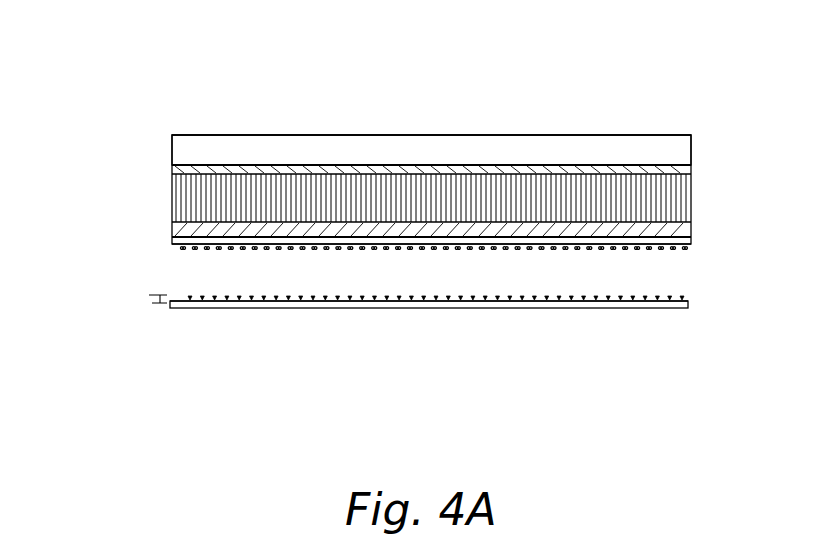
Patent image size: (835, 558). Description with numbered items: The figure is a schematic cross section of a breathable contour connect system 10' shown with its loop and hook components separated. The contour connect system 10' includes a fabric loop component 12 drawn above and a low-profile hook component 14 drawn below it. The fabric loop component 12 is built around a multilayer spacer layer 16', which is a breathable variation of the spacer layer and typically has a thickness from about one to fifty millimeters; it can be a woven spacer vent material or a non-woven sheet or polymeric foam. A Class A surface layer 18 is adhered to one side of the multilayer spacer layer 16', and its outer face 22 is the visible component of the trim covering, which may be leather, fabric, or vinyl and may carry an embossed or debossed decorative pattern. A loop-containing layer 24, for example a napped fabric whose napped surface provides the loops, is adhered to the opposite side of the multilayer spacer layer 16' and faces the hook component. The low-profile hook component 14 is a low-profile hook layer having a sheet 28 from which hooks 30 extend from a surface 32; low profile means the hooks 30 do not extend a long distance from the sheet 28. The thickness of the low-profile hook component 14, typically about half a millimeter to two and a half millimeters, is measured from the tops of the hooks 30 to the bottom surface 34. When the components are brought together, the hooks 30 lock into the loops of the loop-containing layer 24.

The contour connect system 10' is at (361, 133).
The fabric loop component 12 is at (110, 165).
The low-profile hook component 14 is at (111, 303).
The multilayer spacer layer 16' is at (460, 201).
The Class A surface layer 18 is at (683, 145).
The face 22 is at (393, 135).
The loop-containing layer 24 is at (673, 250).
The sheet 28 is at (673, 308).
The hooks 30 is at (686, 302).
The surface 32 is at (198, 298).
The bottom surface 34 is at (232, 308).